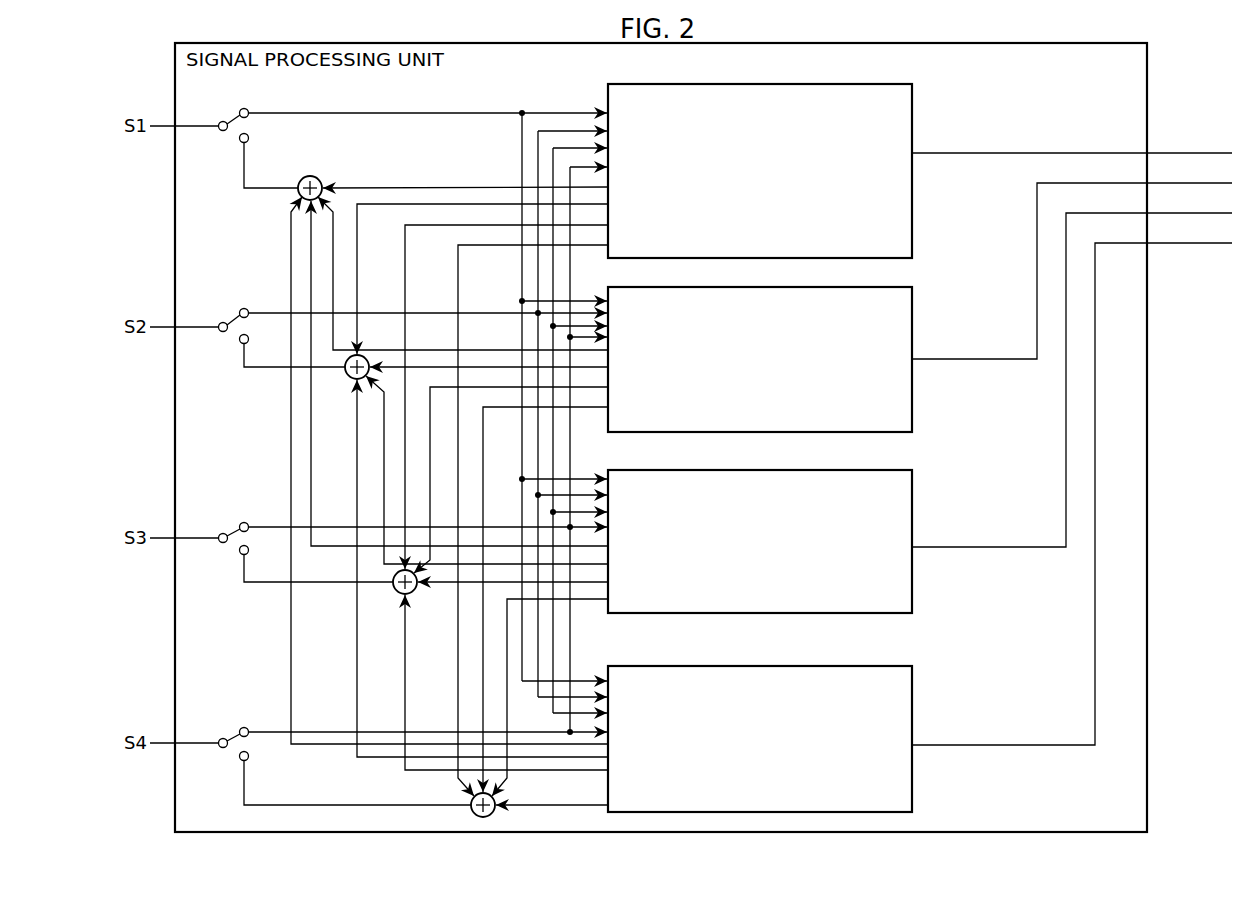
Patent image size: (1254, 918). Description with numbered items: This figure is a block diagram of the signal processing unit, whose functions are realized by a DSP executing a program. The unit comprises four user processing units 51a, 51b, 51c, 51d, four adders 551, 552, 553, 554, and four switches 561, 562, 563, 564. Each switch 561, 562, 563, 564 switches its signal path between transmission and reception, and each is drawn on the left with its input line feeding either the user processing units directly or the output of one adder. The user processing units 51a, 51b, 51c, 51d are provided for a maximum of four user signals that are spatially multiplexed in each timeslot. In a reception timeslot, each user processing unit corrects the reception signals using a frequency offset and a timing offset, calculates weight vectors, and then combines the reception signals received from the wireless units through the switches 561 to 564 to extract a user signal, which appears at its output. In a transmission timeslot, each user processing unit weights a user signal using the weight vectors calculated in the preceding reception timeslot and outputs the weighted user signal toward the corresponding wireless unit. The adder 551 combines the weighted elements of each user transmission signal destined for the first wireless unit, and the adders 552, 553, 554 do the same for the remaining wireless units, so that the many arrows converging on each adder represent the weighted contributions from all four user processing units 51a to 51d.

The user processing unit 51a is at (802, 84).
The user processing unit 51b is at (802, 287).
The user processing unit 51c is at (802, 470).
The user processing unit 51d is at (802, 666).
The adder 551 is at (321, 178).
The adder 552 is at (348, 378).
The adder 553 is at (396, 593).
The adder 554 is at (493, 797).
The switch 561 is at (236, 111).
The switch 562 is at (236, 311).
The switch 563 is at (236, 524).
The switch 564 is at (236, 729).